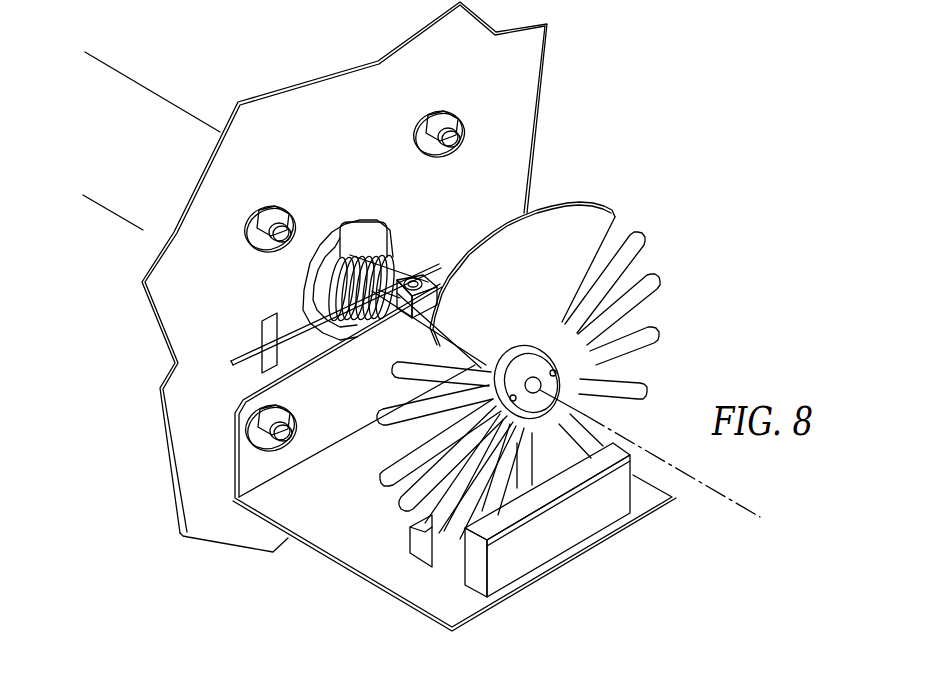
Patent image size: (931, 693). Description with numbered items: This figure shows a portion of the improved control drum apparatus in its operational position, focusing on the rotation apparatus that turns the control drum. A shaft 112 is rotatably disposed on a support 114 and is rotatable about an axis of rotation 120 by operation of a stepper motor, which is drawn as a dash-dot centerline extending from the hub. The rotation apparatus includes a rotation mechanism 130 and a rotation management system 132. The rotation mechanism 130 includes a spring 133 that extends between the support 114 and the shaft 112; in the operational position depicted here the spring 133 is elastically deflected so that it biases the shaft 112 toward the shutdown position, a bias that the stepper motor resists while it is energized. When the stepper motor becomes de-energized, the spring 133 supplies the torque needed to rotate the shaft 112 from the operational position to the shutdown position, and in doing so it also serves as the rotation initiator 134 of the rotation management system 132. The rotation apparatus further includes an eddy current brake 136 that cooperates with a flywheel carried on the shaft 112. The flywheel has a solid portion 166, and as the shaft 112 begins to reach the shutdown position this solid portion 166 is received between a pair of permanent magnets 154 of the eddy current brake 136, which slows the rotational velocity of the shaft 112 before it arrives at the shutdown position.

The shaft 112 is at (148, 83).
The support 114 is at (287, 83).
The axis of rotation 120 is at (740, 500).
The rotation mechanism 130 is at (340, 222).
The rotation management system 132 is at (637, 537).
The spring 133 is at (292, 323).
The rotation initiator 134 is at (312, 337).
The eddy current brake 136 is at (557, 533).
The permanent magnets 154 is at (410, 540).
The solid portion 166 is at (558, 202).